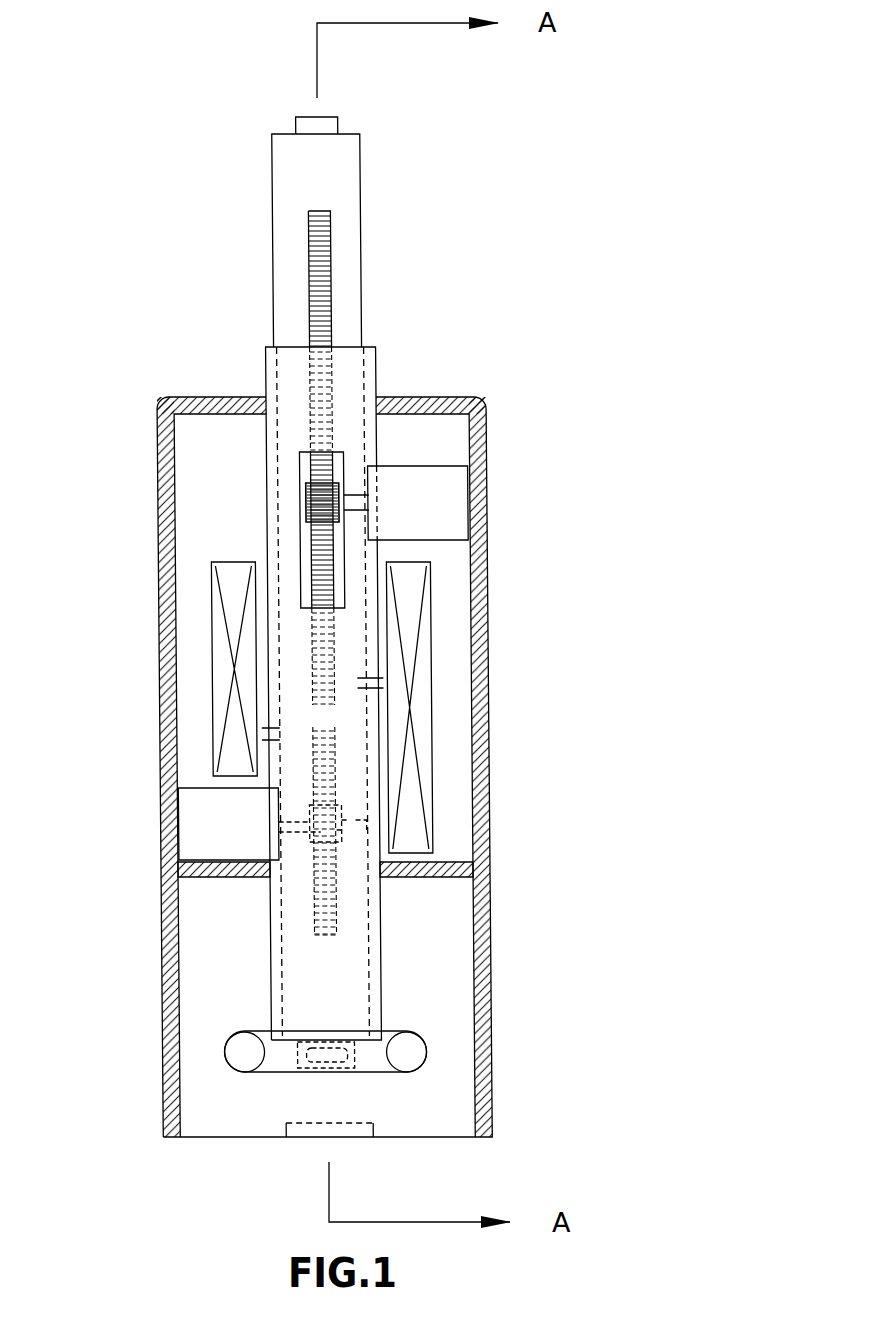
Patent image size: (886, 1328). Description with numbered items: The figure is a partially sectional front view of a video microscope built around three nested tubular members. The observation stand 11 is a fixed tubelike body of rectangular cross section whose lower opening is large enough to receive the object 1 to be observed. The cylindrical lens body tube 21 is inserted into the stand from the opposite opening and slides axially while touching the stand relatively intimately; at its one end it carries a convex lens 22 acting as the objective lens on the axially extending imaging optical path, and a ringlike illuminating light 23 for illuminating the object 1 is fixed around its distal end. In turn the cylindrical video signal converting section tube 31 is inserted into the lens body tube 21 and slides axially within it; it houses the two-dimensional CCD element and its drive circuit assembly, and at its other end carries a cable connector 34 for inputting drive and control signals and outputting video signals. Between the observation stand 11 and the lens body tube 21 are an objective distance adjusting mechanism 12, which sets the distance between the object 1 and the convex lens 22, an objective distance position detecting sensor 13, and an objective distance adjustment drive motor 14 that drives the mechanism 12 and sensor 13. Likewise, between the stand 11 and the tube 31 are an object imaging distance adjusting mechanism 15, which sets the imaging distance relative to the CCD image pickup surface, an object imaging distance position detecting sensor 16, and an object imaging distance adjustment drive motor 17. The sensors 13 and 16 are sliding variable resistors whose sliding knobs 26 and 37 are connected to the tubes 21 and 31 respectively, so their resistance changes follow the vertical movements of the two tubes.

The object 1 is at (338, 1123).
The observation stand 11 is at (487, 790).
The objective distance adjusting mechanism 12 is at (308, 842).
The objective distance position detecting sensor 13 is at (211, 604).
The objective distance adjustment drive motor 14 is at (216, 820).
The object imaging distance adjusting mechanism 15 is at (332, 480).
The object imaging distance position detecting sensor 16 is at (434, 637).
The object imaging distance adjustment drive motor 17 is at (447, 507).
The lens body tube 21 is at (383, 967).
The convex lens 22 is at (308, 1060).
The ringlike illuminating light 23 is at (225, 1048).
The sliding knob 26 is at (250, 733).
The video signal converting section tube 31 is at (277, 258).
The cable connector 34 is at (300, 116).
The sliding knob 37 is at (390, 688).